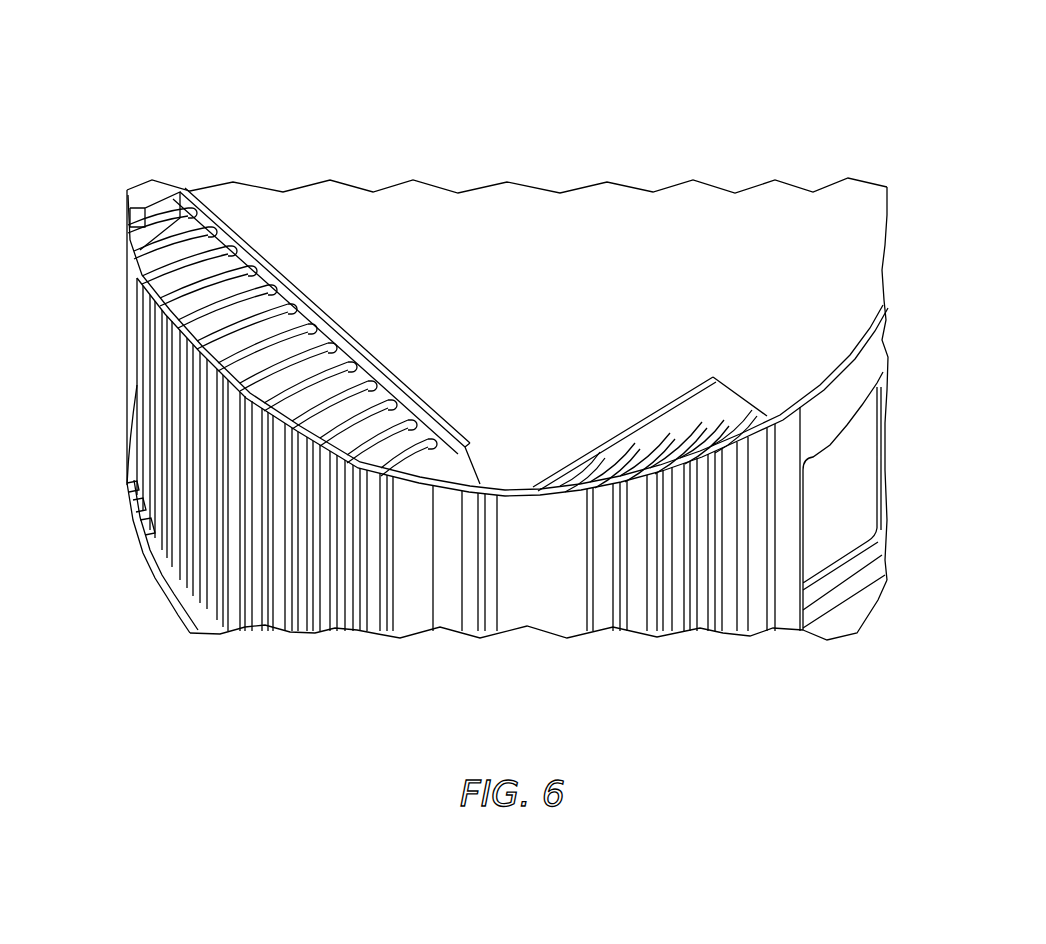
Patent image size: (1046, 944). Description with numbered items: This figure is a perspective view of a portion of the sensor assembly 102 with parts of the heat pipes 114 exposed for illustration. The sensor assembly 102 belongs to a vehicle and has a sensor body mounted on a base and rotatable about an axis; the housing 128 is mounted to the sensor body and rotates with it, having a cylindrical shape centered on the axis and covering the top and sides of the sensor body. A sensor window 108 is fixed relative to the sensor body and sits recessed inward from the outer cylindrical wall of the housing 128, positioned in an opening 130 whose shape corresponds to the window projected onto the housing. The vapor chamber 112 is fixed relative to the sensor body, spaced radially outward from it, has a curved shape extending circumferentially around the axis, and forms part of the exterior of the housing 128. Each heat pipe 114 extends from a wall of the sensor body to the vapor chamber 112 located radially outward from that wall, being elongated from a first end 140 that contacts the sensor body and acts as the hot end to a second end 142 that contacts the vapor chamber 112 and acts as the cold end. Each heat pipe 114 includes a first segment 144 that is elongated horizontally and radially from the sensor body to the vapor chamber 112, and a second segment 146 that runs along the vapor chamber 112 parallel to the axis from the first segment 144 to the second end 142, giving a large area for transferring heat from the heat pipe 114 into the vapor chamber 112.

The sensor assembly 102 is at (340, 48).
The sensor window 108 is at (857, 473).
The vapor chamber 112 is at (500, 488).
The heat pipe 114 is at (250, 268).
The housing 128 is at (595, 222).
The opening 130 is at (860, 580).
The first end 140 is at (452, 458).
The second end 142 is at (150, 525).
The first segment 144 is at (357, 413).
The second segment 146 is at (370, 618).